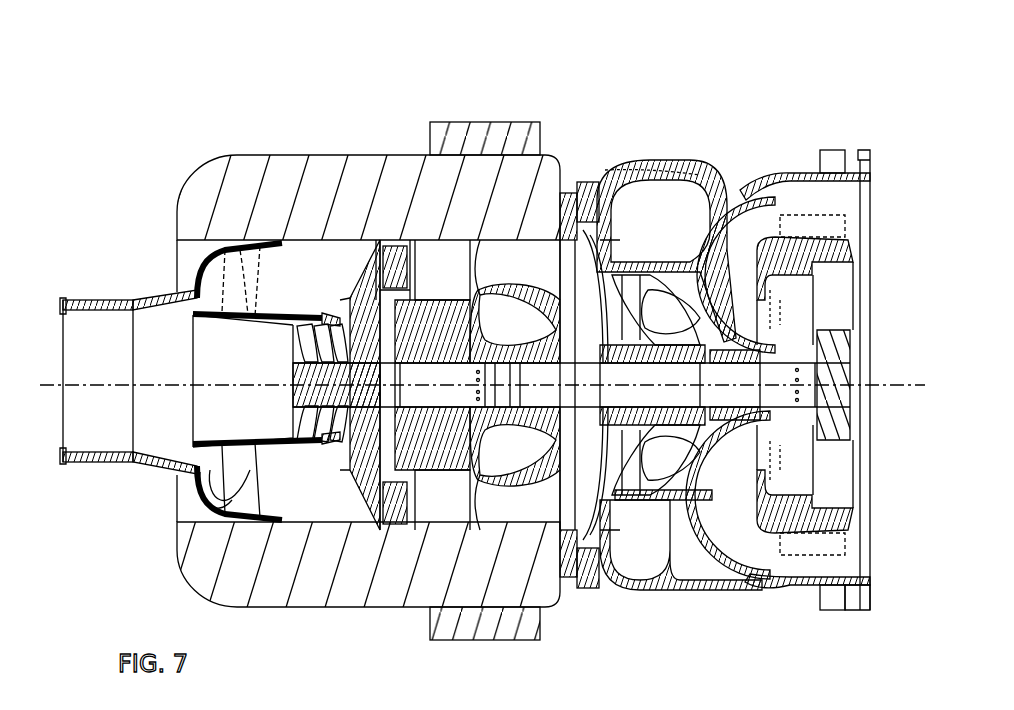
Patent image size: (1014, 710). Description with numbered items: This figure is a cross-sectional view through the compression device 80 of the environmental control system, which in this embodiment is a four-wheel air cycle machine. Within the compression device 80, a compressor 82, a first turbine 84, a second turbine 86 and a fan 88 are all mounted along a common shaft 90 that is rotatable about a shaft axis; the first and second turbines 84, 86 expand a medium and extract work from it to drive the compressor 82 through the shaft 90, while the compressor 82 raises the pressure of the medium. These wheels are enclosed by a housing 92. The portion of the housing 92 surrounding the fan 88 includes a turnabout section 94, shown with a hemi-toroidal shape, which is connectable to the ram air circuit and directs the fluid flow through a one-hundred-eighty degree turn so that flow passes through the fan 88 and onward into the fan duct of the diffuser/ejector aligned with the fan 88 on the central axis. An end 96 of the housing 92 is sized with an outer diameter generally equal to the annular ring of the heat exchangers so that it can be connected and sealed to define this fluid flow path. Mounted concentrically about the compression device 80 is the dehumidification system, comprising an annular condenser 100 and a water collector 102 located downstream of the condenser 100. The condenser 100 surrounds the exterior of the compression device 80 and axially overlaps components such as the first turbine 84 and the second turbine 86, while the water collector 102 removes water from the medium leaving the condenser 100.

The compression device 80 is at (481, 345).
The compressor 82 is at (655, 445).
The first turbine 84 is at (593, 552).
The second turbine 86 is at (340, 300).
The fan 88 is at (837, 350).
The shaft 90 is at (753, 400).
The housing 92 is at (700, 177).
The turnabout section 94 is at (757, 220).
The end of the housing 96 is at (873, 562).
The condenser 100 is at (372, 190).
The water collector 102 is at (484, 135).